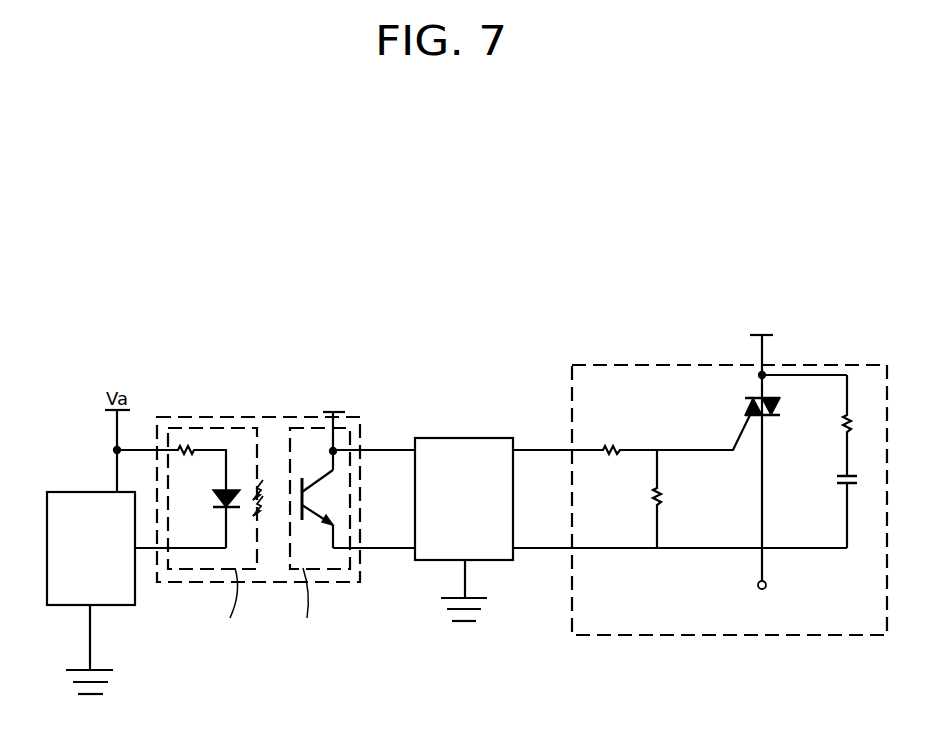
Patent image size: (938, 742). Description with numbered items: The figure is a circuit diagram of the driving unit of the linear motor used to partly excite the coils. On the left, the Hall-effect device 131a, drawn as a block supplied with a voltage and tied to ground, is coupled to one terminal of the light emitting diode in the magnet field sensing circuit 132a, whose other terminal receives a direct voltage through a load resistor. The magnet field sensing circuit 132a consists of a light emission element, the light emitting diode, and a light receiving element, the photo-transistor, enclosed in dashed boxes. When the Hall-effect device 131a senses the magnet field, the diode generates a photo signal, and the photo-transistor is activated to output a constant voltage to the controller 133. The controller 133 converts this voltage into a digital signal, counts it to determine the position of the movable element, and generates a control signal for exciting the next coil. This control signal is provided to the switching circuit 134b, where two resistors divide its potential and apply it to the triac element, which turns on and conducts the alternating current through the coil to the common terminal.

The Hall-effect device 131a is at (63, 597).
The magnet field sensing circuit 132a is at (238, 417).
The controller 133 is at (445, 438).
The switching circuit 134b is at (612, 365).